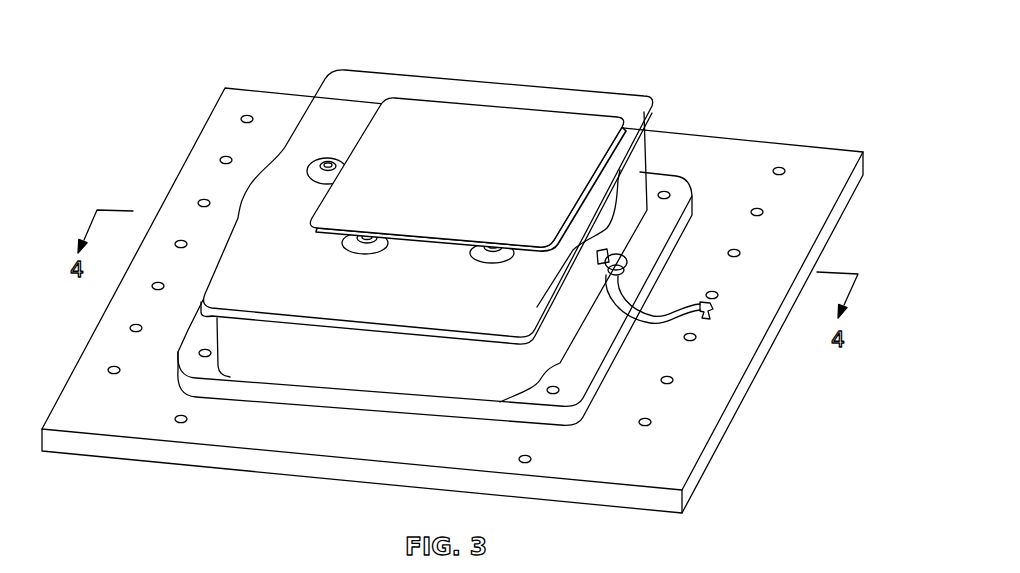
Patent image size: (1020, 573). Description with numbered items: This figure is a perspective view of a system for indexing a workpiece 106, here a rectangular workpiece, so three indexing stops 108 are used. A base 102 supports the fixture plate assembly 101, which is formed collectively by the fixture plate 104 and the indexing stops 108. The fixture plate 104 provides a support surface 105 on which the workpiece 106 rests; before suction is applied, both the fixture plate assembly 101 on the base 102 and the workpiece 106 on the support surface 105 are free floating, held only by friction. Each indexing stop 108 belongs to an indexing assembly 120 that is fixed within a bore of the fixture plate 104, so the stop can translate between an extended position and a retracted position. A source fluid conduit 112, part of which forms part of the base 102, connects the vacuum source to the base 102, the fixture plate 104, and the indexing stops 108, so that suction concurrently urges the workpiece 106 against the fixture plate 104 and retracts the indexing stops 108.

The fixture plate assembly 101 is at (354, 62).
The base 102 is at (655, 156).
The fixture plate 104 is at (656, 88).
The support surface 105 is at (603, 200).
The workpiece 106 is at (513, 121).
The indexing stop 108 is at (333, 164).
The source fluid conduit 112 is at (687, 302).
The indexing assembly 120 is at (308, 190).